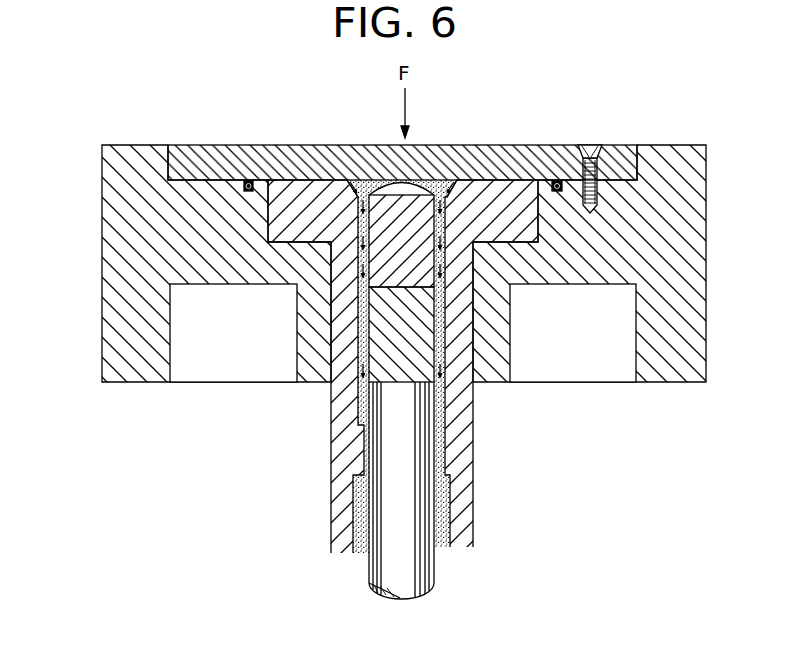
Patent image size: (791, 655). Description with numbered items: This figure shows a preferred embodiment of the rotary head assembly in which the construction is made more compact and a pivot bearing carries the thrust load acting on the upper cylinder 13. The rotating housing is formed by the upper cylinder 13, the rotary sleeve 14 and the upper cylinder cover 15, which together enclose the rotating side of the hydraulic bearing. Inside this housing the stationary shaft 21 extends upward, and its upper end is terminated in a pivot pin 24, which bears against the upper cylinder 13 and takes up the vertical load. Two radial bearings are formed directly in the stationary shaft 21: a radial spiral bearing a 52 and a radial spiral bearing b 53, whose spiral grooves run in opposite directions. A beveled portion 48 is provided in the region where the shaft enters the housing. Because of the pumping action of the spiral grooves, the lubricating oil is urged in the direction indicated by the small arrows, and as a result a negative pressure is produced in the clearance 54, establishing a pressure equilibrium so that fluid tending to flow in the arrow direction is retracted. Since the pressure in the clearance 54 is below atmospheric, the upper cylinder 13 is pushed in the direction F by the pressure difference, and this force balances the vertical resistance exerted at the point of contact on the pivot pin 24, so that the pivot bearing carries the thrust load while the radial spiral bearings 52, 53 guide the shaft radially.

The upper cylinder 13 is at (117, 177).
The rotary sleeve 14 is at (465, 403).
The upper cylinder cover 15 is at (187, 162).
The stationary shaft 21 is at (420, 565).
The pivot pin 24 is at (372, 188).
The beveled portion 48 is at (450, 191).
The radial spiral bearing a 52 is at (417, 200).
The radial spiral bearing b 53 is at (392, 362).
The clearance 54 is at (352, 186).